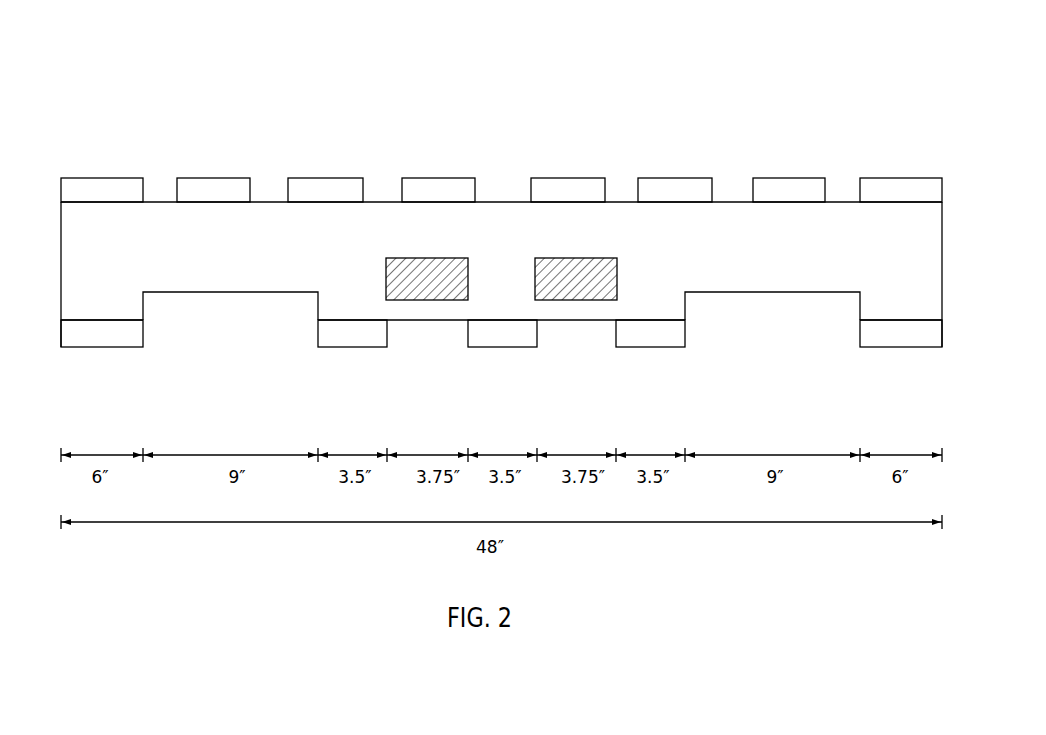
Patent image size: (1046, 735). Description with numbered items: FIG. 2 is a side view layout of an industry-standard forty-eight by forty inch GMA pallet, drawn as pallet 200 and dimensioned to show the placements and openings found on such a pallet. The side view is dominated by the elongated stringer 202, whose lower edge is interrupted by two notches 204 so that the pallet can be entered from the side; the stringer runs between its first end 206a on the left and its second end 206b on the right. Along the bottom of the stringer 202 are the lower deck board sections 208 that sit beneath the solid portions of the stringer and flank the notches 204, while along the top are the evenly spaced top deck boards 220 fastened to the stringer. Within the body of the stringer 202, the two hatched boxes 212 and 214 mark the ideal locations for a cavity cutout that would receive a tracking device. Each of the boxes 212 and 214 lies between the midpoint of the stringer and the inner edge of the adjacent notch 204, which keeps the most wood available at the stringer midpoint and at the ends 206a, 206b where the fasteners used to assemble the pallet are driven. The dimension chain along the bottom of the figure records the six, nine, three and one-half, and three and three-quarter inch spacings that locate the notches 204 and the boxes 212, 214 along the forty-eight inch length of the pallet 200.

The panel assembly 200 is at (439, 44).
The panel body 202 is at (71, 233).
The recess 204 is at (257, 292).
The first end 206a is at (62, 307).
The second end 206b is at (942, 308).
The lower projections 208 is at (95, 347).
The box 212 is at (437, 293).
The box 214 is at (586, 293).
The upper projections 220 is at (95, 178).